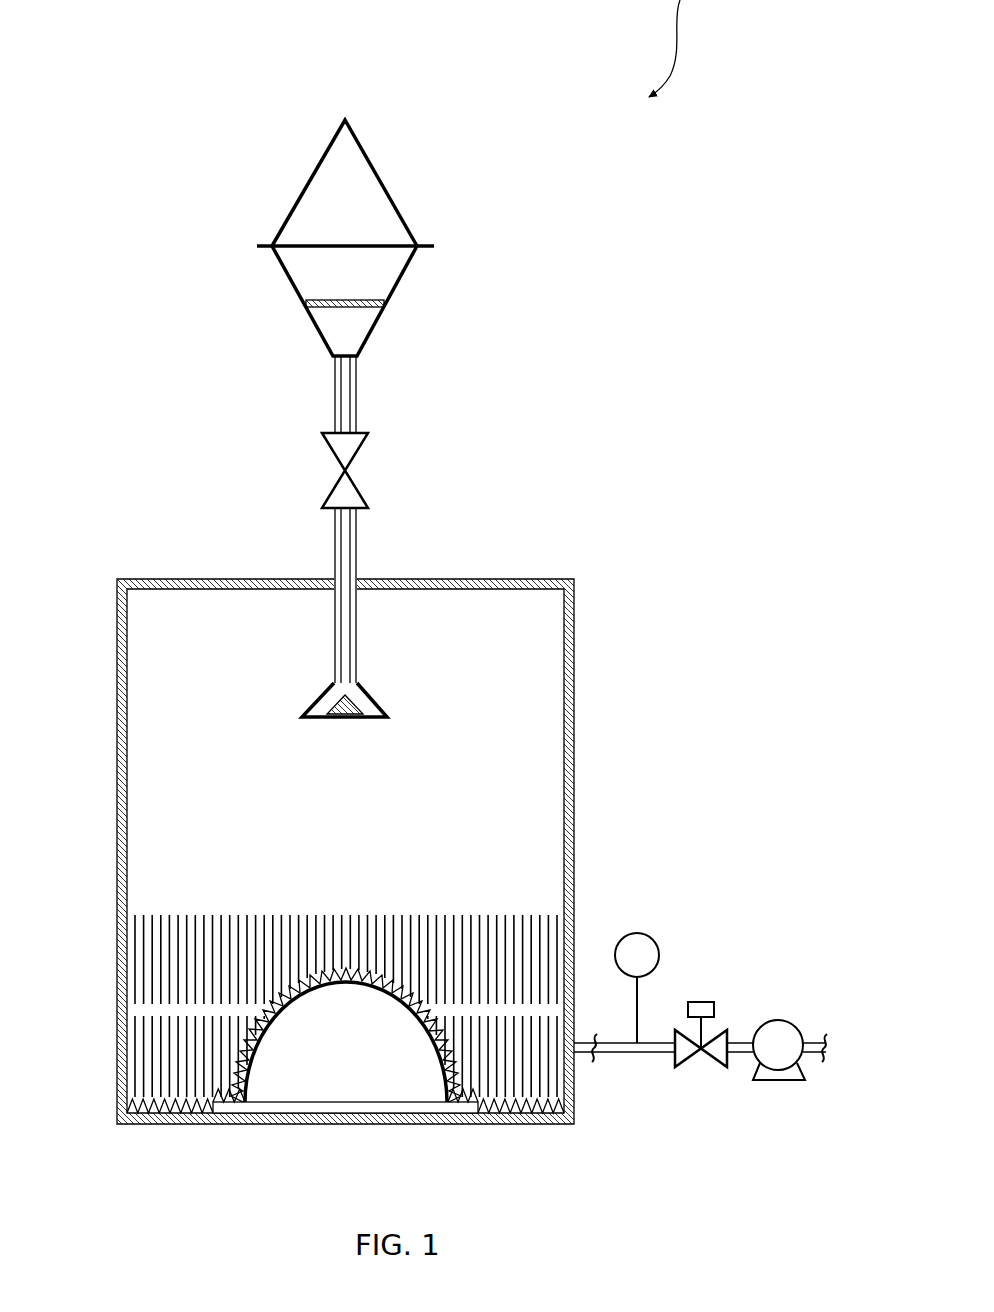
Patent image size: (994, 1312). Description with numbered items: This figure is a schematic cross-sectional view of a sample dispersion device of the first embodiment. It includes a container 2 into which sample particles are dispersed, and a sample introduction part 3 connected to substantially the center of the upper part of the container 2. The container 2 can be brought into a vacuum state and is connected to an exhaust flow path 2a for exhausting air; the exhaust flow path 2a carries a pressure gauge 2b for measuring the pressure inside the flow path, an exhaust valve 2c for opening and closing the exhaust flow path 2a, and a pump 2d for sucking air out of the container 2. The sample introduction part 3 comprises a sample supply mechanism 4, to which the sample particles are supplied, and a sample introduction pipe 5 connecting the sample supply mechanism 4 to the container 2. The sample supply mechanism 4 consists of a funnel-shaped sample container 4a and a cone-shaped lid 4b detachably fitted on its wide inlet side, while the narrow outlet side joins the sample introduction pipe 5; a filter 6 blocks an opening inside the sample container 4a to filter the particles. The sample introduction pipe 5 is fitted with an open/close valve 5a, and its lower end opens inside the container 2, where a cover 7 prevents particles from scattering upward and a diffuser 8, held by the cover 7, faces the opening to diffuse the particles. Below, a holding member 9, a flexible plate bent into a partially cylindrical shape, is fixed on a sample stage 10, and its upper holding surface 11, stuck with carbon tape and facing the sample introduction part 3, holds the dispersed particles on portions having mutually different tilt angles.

The container 2 is at (240, 578).
The exhaust flow path 2a is at (656, 1054).
The pressure gauge 2b is at (636, 932).
The exhaust valve 2c is at (700, 1001).
The pump 2d is at (778, 1020).
The sample introduction part 3 is at (463, 112).
The sample supply mechanism 4 is at (272, 161).
The sample container 4a is at (299, 292).
The lid 4b is at (381, 176).
The sample introduction pipe 5 is at (358, 412).
The open/close valve 5a is at (323, 446).
The filter 6 is at (346, 300).
The cover 7 is at (322, 697).
The diffuser 8 is at (345, 718).
The holding member 9 is at (394, 995).
The sample stage 10 is at (312, 1126).
The holding surface 11 is at (323, 987).